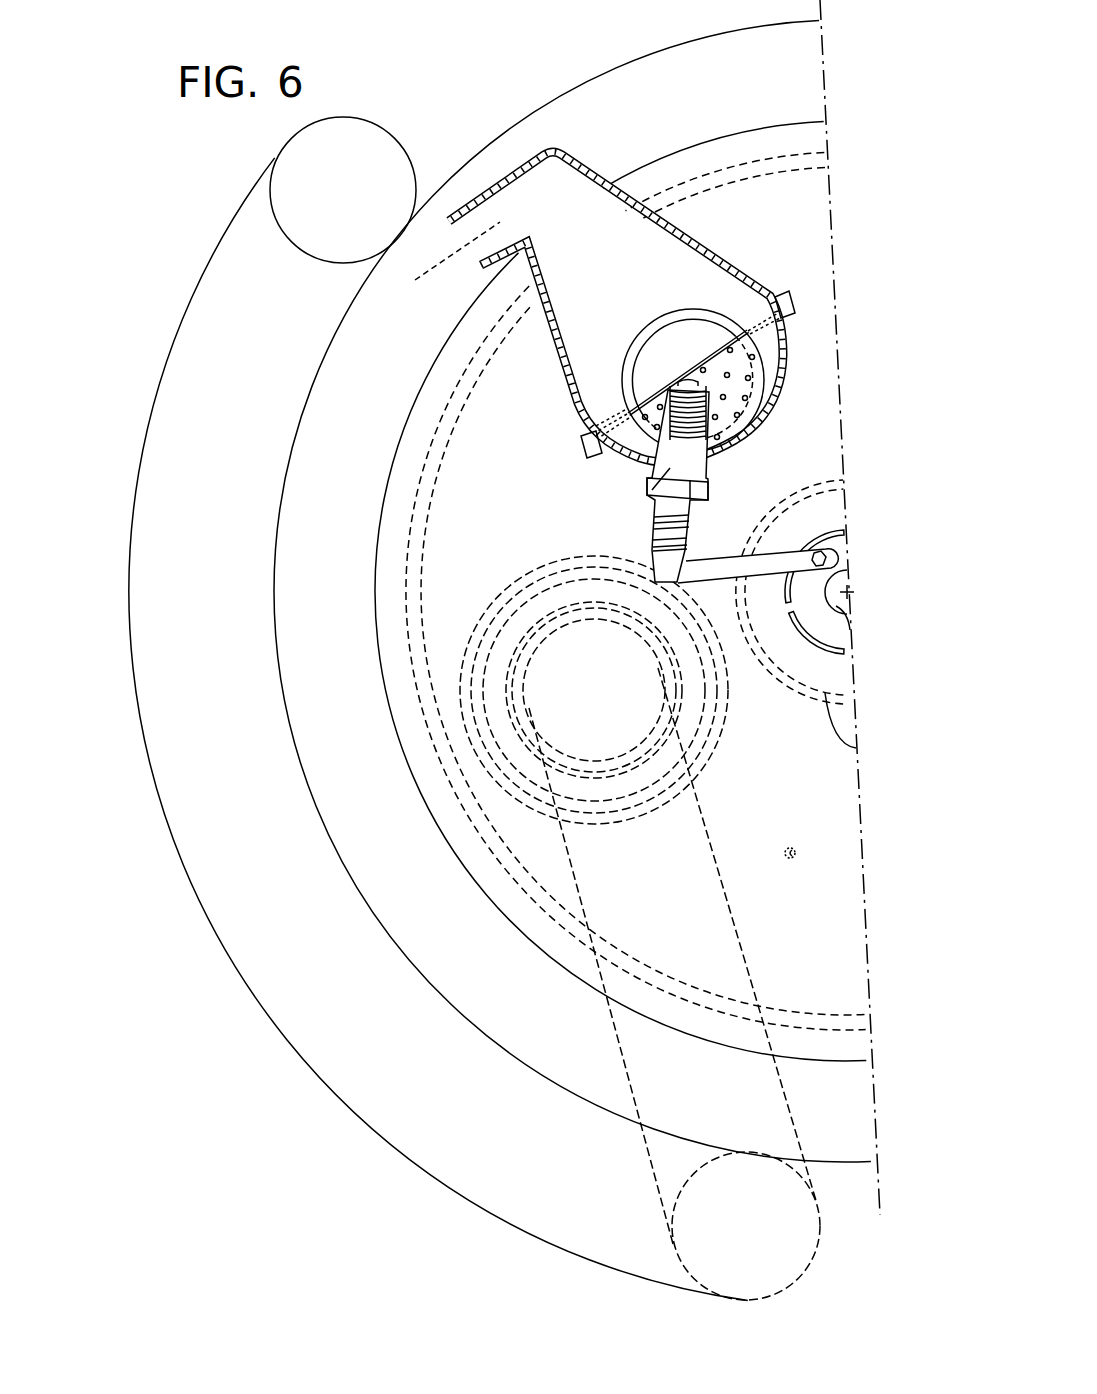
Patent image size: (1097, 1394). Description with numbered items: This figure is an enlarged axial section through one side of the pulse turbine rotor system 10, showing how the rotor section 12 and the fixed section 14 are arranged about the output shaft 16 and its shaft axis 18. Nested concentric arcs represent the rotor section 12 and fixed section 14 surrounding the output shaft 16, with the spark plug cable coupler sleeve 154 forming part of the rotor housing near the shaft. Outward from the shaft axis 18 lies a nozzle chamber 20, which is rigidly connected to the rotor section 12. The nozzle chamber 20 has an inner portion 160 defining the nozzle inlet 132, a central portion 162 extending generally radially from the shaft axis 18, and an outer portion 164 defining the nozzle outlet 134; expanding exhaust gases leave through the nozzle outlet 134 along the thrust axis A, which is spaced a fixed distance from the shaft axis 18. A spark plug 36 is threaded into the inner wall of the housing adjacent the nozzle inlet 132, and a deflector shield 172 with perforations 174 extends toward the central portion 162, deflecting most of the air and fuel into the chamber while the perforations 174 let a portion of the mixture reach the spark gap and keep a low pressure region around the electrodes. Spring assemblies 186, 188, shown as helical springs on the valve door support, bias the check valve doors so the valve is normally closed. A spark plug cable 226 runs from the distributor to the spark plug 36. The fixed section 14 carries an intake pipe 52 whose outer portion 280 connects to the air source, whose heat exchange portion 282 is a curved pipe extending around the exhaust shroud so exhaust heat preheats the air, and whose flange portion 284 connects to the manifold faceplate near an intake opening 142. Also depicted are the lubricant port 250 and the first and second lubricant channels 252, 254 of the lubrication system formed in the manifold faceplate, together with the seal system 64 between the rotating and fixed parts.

The pulse turbine rotor system 10 is at (225, 195).
The rotor section 12 is at (692, 160).
The fixed section 14 is at (617, 90).
The output shaft 16 is at (835, 608).
The shaft axis 18 is at (853, 592).
The nozzle chamber 20 is at (616, 307).
The spark plug 36 is at (647, 484).
The intake pipe 52 is at (210, 278).
The seal system 64 is at (512, 578).
The nozzle inlet 132 is at (640, 372).
The nozzle outlet 134 is at (475, 223).
The intake opening 142 is at (540, 643).
The spark plug cable coupler sleeve 154 is at (846, 542).
The inner portion 160 is at (622, 385).
The central portion 162 is at (641, 272).
The outer portion 164 is at (500, 207).
The deflector shield 172 is at (750, 372).
The perforations 174 is at (757, 380).
The spring assembly 186 is at (585, 452).
The spring assembly 188 is at (795, 302).
The spark plug cable 226 is at (727, 565).
The lubricant port 250 is at (797, 852).
The first lubricant channel 252 is at (855, 748).
The second lubricant channel 254 is at (432, 480).
The outer portion 280 is at (367, 117).
The heat exchange portion 282 is at (167, 747).
The flange portion 284 is at (631, 1060).
The thrust axis A is at (430, 272).